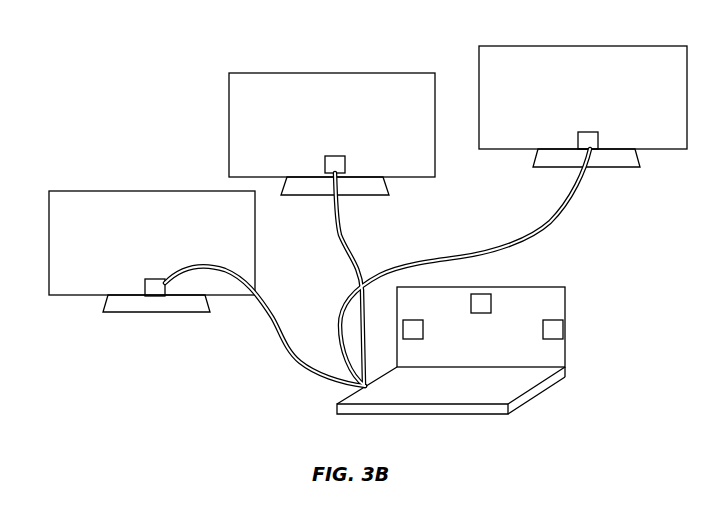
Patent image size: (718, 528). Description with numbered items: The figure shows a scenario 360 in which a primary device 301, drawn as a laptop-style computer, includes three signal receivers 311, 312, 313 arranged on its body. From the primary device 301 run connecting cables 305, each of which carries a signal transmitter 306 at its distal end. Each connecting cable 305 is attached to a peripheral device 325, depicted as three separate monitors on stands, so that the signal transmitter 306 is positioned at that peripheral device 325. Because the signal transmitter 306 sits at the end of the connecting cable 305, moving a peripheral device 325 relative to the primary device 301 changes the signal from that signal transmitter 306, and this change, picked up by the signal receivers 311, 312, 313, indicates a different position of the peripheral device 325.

The scenario 360 is at (145, 117).
The peripheral device 325 is at (124, 190).
The signal transmitter 306 is at (165, 297).
The connecting cable 305 is at (340, 232).
The primary device 301 is at (547, 383).
The signal receiver 311 is at (420, 318).
The signal receiver 312 is at (492, 305).
The signal receiver 313 is at (563, 332).